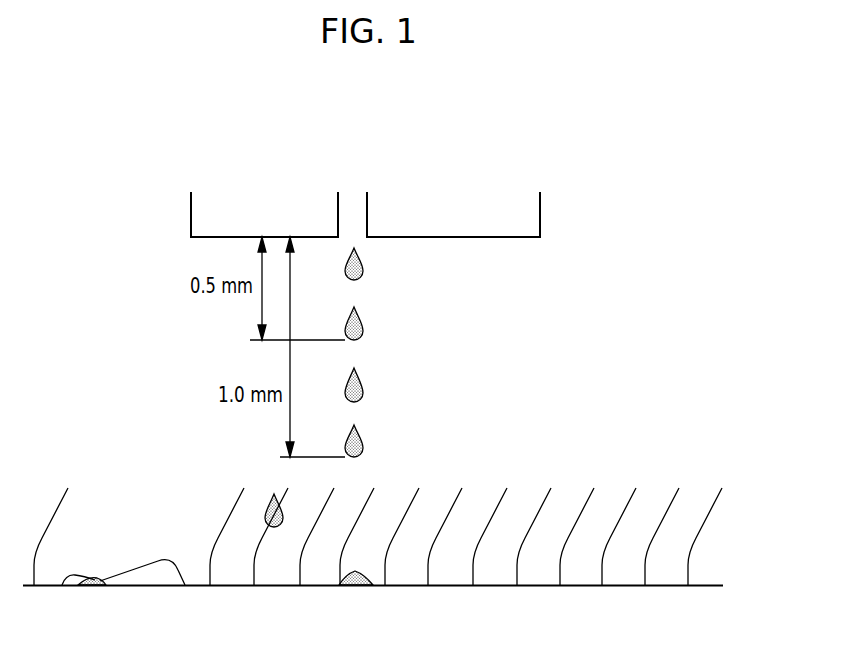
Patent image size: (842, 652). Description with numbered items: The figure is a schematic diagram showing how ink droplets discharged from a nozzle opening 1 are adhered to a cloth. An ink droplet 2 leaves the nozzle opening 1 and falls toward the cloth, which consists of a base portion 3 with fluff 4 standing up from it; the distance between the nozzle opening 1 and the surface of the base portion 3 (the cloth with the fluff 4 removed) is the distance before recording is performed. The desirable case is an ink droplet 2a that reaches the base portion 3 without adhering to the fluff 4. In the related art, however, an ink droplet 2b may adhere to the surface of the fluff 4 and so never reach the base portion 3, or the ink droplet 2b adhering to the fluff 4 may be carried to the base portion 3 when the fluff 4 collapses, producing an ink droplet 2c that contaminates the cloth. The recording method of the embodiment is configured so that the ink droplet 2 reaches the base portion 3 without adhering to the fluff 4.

The nozzle opening 1 is at (356, 235).
The ink droplet 2 is at (363, 323).
The ink droplet 2a is at (365, 572).
The ink droplet 2b is at (265, 513).
The ink droplet 2c is at (62, 585).
The base portion 3 is at (632, 581).
The fluff 4 is at (537, 512).